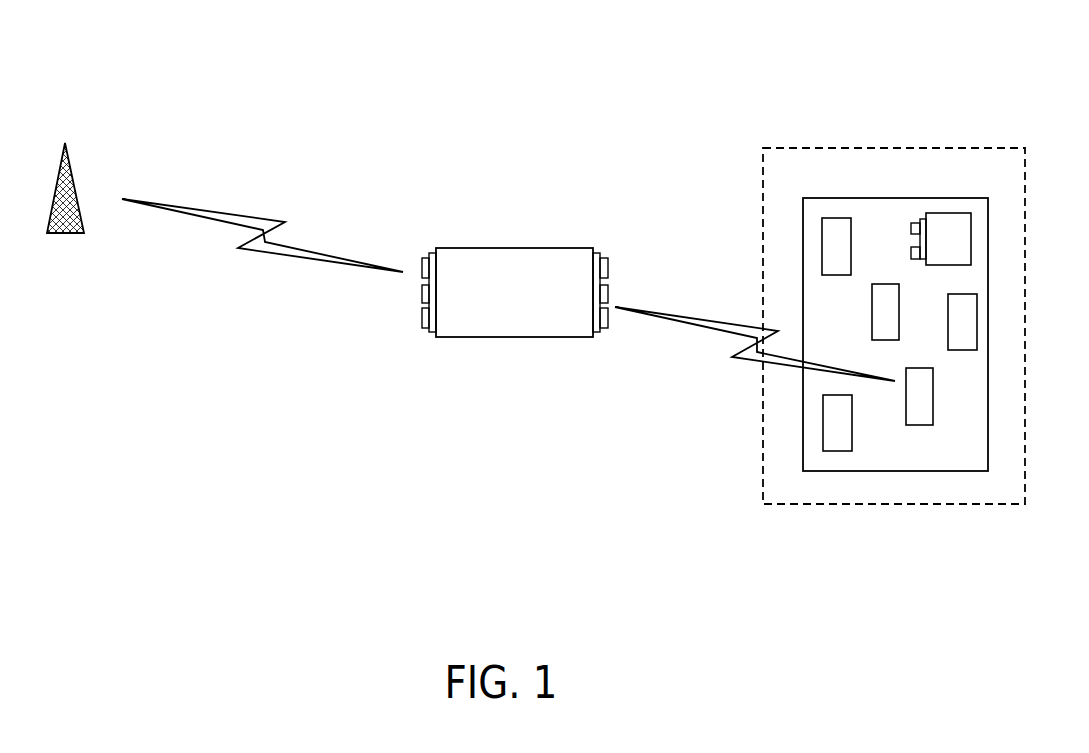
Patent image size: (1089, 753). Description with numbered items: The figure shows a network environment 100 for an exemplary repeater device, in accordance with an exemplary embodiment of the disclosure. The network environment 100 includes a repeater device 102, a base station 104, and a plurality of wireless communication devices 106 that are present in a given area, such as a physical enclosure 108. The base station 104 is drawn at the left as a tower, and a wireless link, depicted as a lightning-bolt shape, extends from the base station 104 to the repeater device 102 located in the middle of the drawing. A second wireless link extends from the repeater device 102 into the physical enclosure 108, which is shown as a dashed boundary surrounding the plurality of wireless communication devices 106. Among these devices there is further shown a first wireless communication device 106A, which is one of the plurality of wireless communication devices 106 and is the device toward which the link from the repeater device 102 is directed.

The network environment 100 is at (973, 66).
The repeater device 102 is at (498, 332).
The base station 104 is at (72, 177).
The plurality of wireless communication devices 106 is at (866, 201).
The first wireless communication device 106A is at (923, 419).
The physical enclosure 108 is at (802, 148).